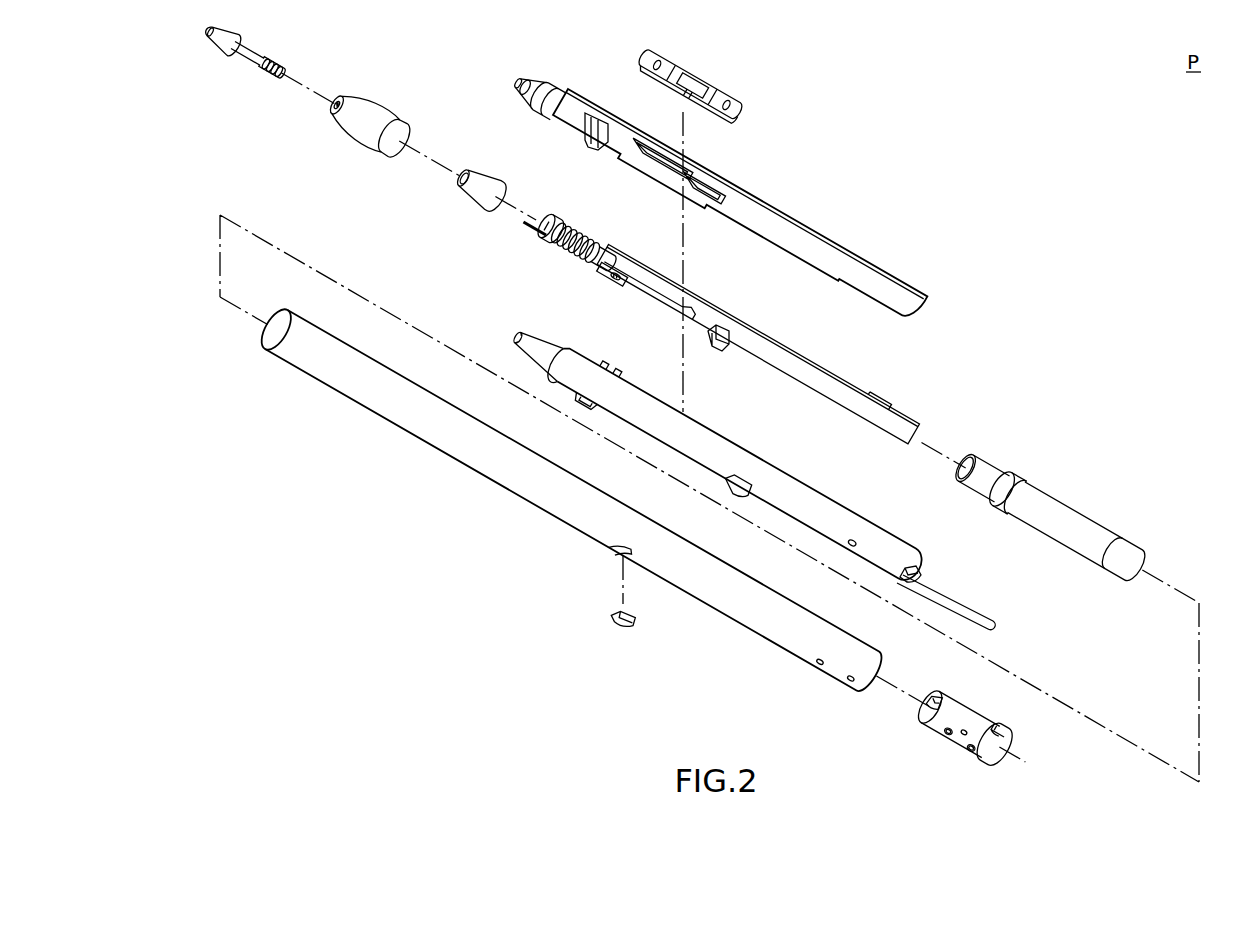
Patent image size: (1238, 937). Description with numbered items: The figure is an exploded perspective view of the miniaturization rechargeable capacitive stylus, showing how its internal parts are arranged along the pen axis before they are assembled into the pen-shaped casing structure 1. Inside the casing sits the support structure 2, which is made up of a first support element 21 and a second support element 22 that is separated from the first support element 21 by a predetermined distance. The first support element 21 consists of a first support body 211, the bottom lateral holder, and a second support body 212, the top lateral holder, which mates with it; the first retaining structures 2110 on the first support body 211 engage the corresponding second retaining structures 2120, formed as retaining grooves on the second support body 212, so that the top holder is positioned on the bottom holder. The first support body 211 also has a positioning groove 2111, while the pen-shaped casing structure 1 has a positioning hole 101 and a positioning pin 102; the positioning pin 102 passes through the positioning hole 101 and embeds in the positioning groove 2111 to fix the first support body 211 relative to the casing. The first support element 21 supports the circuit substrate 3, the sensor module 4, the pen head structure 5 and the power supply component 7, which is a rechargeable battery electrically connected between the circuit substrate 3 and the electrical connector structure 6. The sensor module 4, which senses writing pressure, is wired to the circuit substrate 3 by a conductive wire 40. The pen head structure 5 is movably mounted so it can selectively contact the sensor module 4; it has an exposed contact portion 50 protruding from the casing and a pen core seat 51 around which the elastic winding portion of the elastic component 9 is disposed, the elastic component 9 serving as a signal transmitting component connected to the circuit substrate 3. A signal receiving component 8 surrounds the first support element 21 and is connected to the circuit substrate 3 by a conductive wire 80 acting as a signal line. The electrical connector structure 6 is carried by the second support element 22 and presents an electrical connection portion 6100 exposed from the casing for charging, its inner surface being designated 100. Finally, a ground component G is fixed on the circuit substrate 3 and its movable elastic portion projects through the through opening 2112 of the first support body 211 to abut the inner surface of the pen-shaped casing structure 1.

The pen-shaped casing structure 1 is at (571, 500).
The positioning hole 101 is at (613, 547).
The positioning pin 102 is at (638, 625).
The support structure 2 is at (817, 129).
The first support element 21 is at (876, 164).
The second support body 212 is at (717, 196).
The first support body 211 is at (757, 397).
The first retaining structures 2110 is at (612, 350).
The positioning groove 2111 is at (922, 576).
The through opening 2112 is at (742, 470).
The second retaining structures 2120 is at (601, 128).
The second support element 22 is at (950, 710).
The circuit substrate 3 is at (759, 330).
The sensor module 4 is at (575, 267).
The conductive wire 40 is at (621, 274).
The pen head structure 5 is at (240, 62).
The exposed contact portion 50 is at (214, 47).
The pen core seat 51 is at (549, 222).
The electrical connector structure 6 is at (972, 710).
The electrical connection portion 6100 is at (975, 748).
The power supply component 7 is at (1070, 502).
The signal receiving component 8 is at (461, 207).
The conductive wire 80 is at (528, 232).
The elastic component 9 is at (556, 254).
The notch of rear sleeve 100 is at (1000, 712).
The ground component G is at (720, 360).